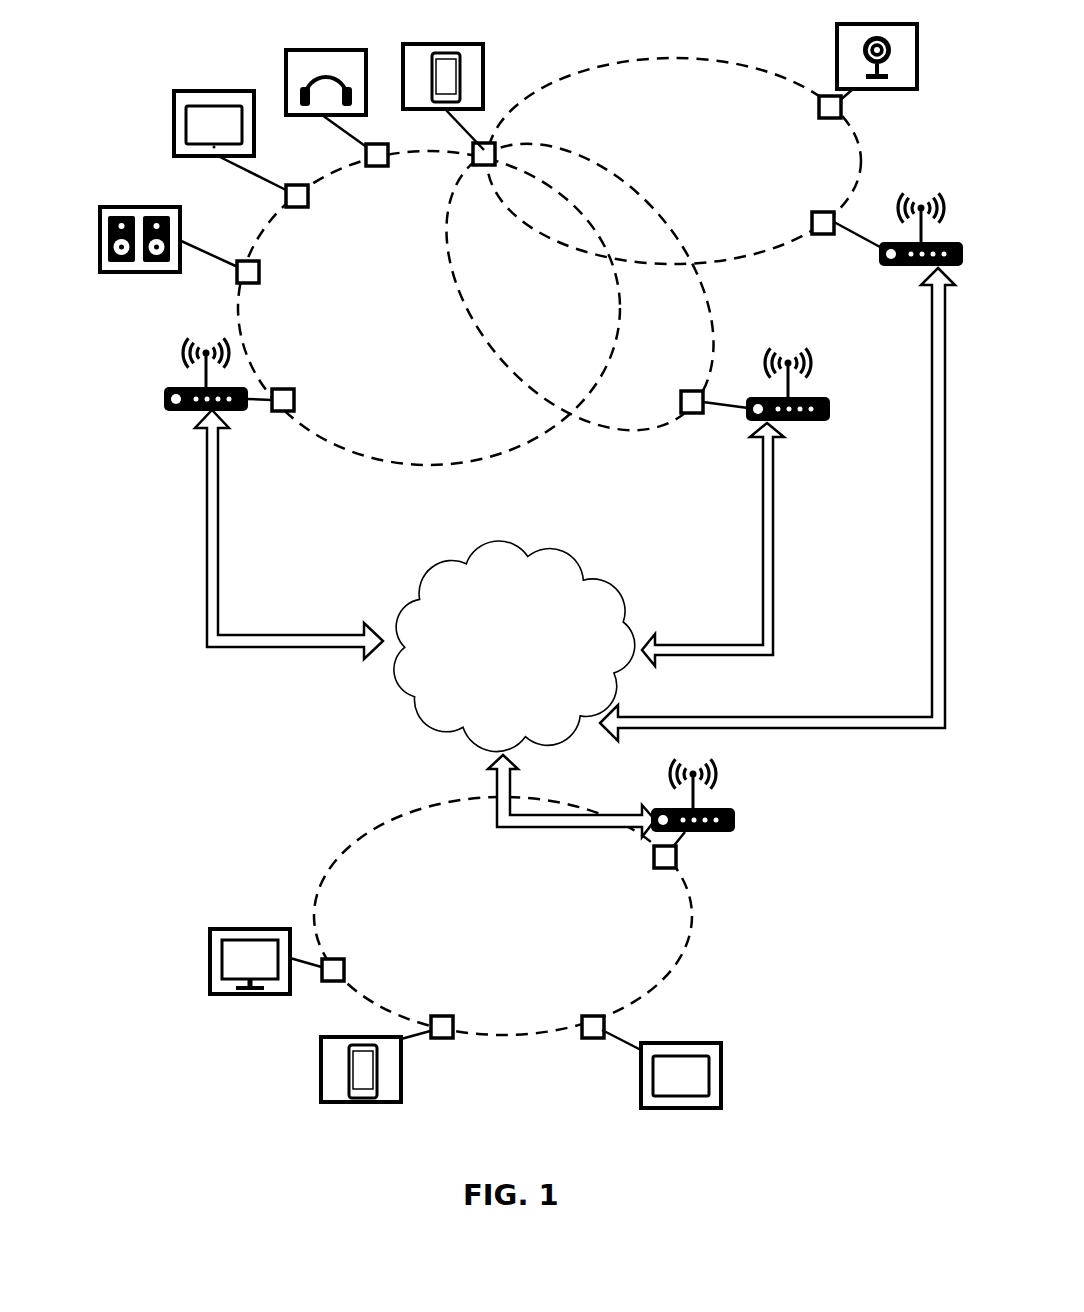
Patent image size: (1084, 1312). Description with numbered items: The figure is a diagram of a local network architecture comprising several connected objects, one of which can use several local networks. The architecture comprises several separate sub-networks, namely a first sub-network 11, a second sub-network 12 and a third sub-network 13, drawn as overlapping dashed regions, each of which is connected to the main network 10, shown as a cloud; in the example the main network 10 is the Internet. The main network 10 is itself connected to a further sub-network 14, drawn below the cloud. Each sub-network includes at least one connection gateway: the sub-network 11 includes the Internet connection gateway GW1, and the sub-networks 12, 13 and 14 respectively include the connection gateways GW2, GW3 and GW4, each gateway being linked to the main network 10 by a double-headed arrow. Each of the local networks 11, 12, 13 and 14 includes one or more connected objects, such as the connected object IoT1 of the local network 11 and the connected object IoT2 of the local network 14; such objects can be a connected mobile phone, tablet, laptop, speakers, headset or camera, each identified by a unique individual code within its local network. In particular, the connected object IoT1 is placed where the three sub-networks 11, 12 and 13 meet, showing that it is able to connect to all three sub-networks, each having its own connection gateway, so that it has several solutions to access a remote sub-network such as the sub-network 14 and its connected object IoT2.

The main network 10 is at (519, 671).
The first sub-network 11 is at (452, 319).
The second sub-network 12 is at (746, 156).
The third sub-network 13 is at (676, 349).
The sub-network 14 is at (516, 923).
The Internet connection gateway GW1 is at (163, 399).
The connection gateway GW2 is at (882, 255).
The connection gateway GW3 is at (780, 421).
The connection gateway GW4 is at (735, 820).
The connected object IoT1 is at (483, 78).
The connected object IoT2 is at (721, 1073).